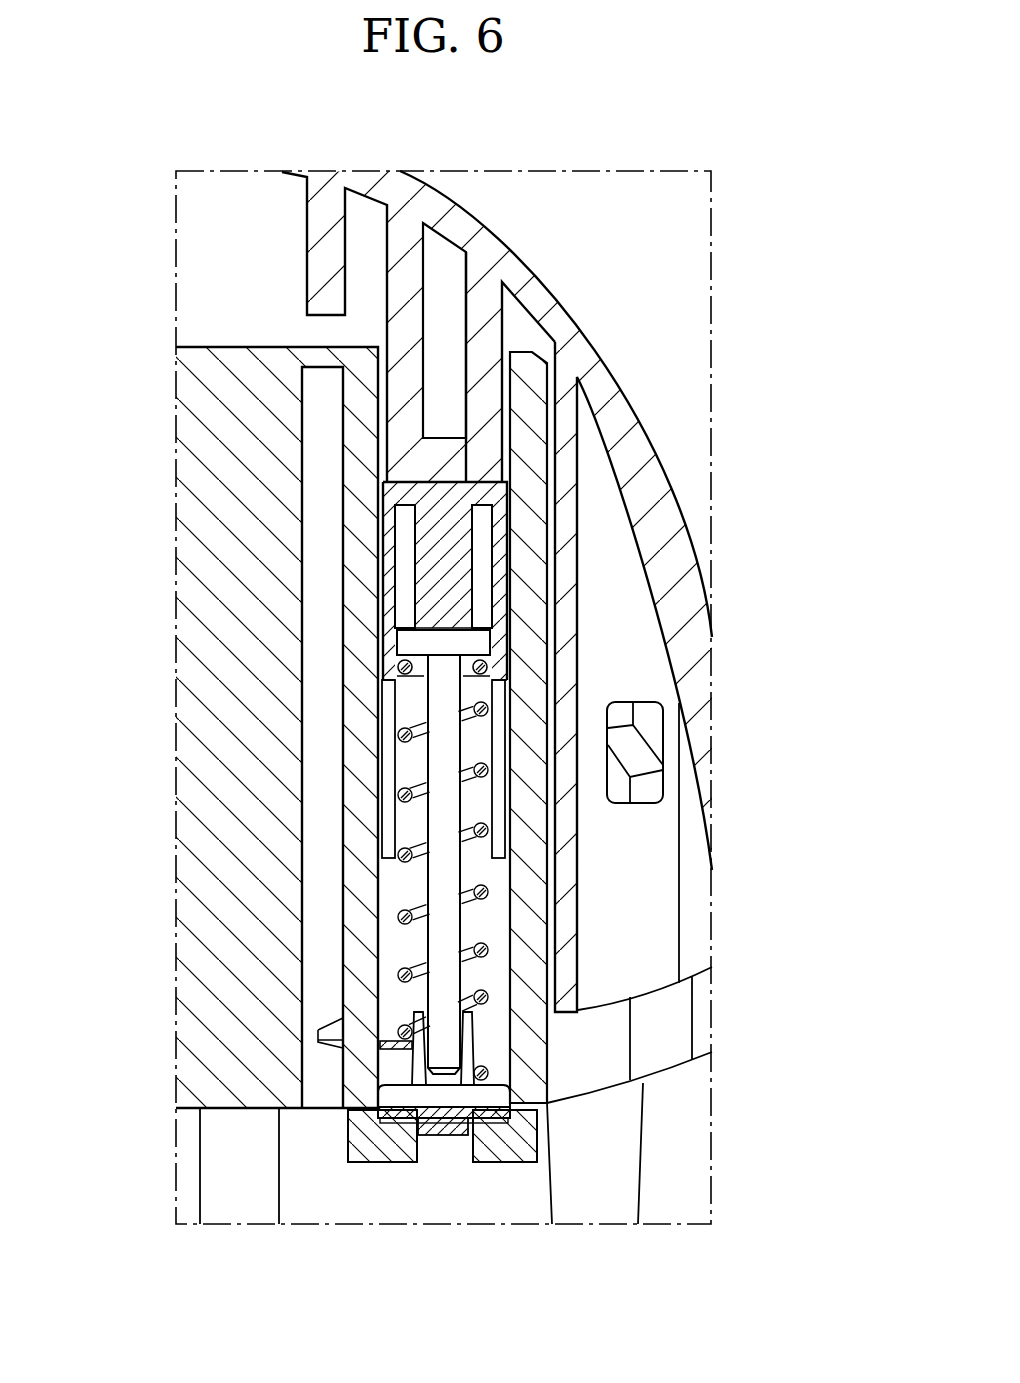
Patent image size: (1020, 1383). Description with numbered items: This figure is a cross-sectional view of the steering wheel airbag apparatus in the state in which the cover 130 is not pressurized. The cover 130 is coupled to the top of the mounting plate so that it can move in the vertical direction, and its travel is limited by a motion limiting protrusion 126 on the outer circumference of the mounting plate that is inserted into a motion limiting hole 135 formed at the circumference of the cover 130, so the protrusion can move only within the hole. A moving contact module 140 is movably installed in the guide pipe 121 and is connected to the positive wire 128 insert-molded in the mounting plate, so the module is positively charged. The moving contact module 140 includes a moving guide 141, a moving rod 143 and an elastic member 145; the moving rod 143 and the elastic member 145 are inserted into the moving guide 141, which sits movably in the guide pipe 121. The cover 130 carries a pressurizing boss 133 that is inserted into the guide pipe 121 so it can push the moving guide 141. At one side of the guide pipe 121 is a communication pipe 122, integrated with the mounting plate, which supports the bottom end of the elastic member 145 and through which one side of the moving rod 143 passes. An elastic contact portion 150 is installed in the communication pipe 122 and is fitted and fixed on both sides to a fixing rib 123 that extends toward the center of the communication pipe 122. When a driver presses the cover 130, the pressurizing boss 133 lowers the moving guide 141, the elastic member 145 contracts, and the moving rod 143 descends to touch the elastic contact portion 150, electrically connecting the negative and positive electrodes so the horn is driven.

The guide pipe 121 is at (358, 772).
The communication pipe 122 is at (420, 1070).
The fixing rib 123 is at (505, 1140).
The motion limiting protrusion 126 is at (655, 788).
The positive wire 128 is at (402, 1047).
The cover 130 is at (612, 392).
The pressurizing boss 133 is at (477, 332).
The motion limiting hole 135 is at (650, 713).
The moving contact module 140 is at (447, 539).
The moving guide 141 is at (428, 582).
The moving rod 143 is at (448, 822).
The elastic member 145 is at (400, 915).
The elastic contact portion 150 is at (440, 1133).